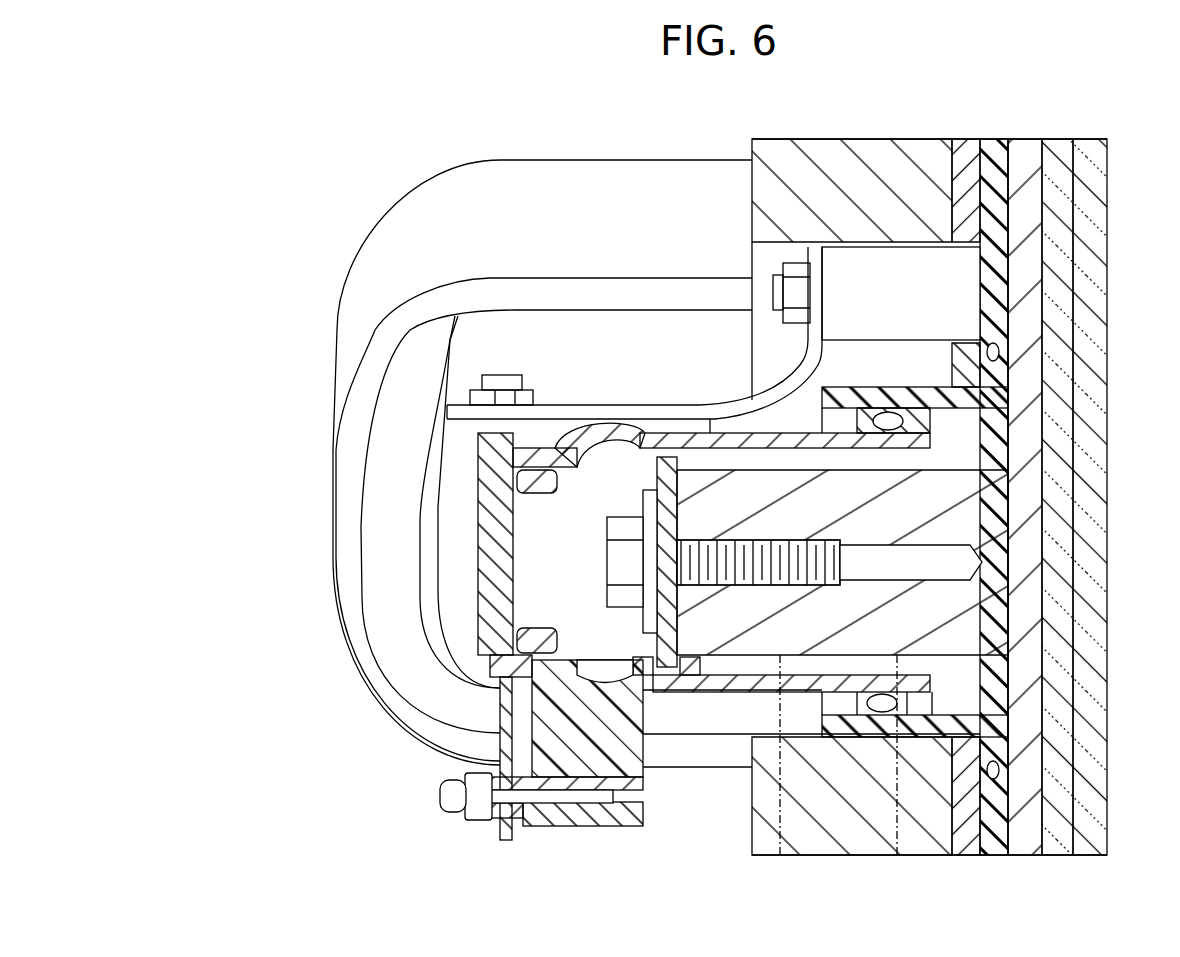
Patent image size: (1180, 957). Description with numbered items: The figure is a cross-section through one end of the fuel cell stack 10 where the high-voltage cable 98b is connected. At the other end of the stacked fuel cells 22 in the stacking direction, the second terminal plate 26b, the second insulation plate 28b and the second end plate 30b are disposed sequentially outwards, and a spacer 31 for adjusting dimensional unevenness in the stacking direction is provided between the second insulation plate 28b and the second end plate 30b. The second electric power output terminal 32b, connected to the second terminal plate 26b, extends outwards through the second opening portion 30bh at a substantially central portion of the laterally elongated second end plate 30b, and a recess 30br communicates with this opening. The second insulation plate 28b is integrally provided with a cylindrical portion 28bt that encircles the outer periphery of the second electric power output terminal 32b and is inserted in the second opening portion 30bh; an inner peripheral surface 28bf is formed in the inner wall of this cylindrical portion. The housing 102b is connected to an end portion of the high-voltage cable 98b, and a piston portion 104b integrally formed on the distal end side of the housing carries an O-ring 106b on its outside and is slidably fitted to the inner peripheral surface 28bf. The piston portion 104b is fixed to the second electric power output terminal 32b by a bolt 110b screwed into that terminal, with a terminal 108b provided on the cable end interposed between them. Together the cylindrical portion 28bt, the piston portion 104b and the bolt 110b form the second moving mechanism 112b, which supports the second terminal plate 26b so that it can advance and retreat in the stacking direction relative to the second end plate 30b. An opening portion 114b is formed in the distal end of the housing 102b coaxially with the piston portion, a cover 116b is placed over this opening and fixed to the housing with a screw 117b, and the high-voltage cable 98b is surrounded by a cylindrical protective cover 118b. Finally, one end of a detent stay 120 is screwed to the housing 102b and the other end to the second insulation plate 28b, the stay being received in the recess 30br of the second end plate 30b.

The fuel cell stack 10 is at (576, 88).
The fuel cells 22 is at (1090, 186).
The second terminal plate 26b is at (1050, 232).
The second insulation plate 28b is at (996, 139).
The cylindrical portion 28bt is at (881, 394).
The inner peripheral surface 28bf is at (851, 713).
The second end plate 30b is at (748, 149).
The recess 30br is at (866, 249).
The second opening portion 30bh is at (800, 733).
The spacer 31 is at (968, 137).
The second electric power output terminal 32b is at (947, 630).
The high-voltage cable 98b is at (432, 364).
The housing 102b is at (474, 519).
The piston portion 104b is at (780, 857).
The O-ring 106b is at (897, 857).
The terminal 108b is at (656, 643).
The bolt 110b is at (790, 556).
The second moving mechanism 112b is at (709, 694).
The opening portion 114b is at (538, 640).
The cover 116b is at (486, 548).
The screw 117b is at (446, 800).
The cylindrical protective cover 118b is at (374, 692).
The detent stay 120 is at (724, 403).